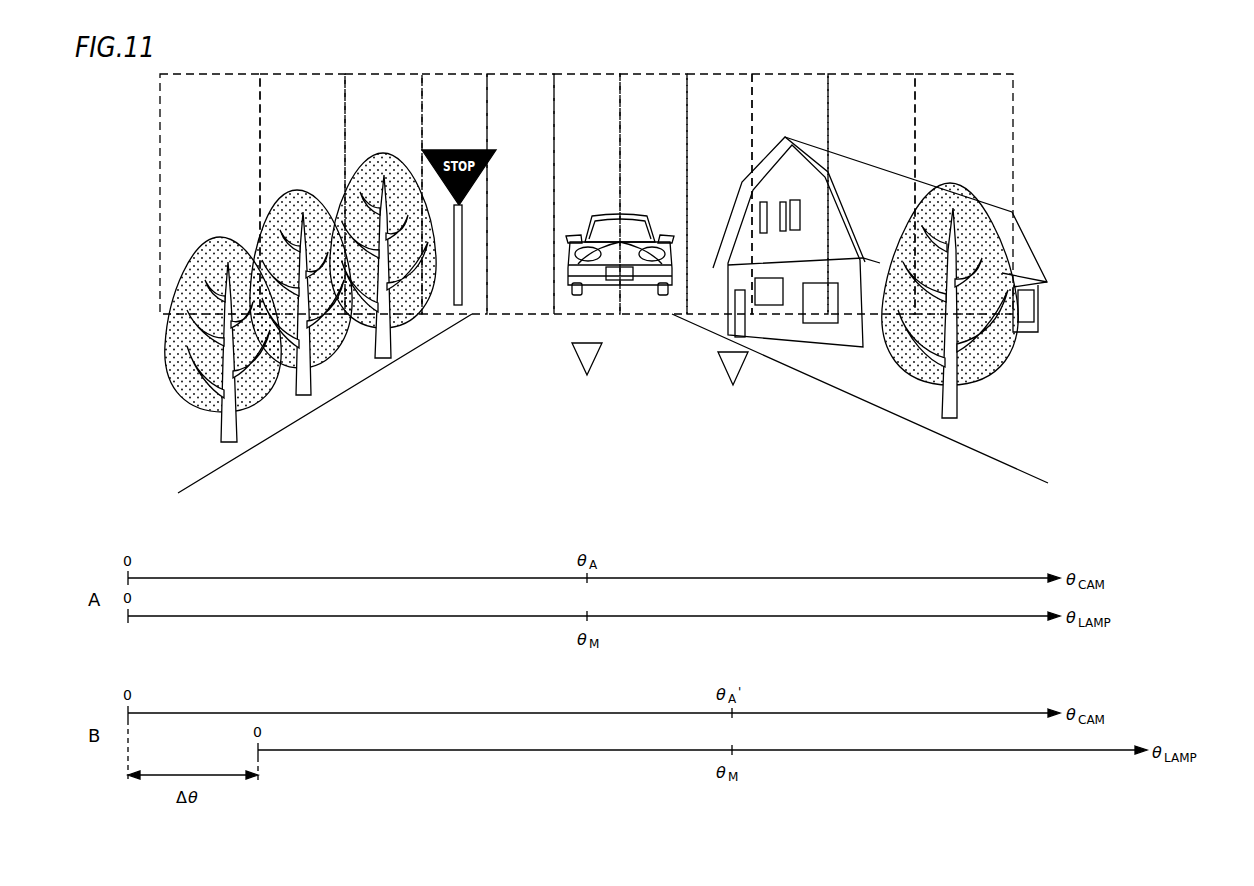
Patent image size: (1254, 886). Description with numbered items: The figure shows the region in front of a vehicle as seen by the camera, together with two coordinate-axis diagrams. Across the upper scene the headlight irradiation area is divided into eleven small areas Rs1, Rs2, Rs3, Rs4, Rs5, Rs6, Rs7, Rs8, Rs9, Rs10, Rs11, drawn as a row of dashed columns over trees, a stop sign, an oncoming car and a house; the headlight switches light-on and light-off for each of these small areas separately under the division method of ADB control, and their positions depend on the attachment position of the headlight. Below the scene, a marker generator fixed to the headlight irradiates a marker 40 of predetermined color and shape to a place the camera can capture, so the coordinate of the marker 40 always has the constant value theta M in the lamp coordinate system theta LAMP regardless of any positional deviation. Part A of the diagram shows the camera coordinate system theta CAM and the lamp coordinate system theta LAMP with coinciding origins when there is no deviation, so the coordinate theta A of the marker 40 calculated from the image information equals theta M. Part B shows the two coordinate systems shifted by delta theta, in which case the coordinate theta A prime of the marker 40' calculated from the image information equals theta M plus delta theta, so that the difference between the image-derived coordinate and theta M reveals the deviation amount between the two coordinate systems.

The small area Rs1 is at (210, 194).
The small area Rs2 is at (302, 194).
The small area Rs3 is at (383, 194).
The small area Rs4 is at (454, 194).
The small area Rs5 is at (520, 194).
The small area Rs6 is at (587, 194).
The small area Rs7 is at (653, 194).
The small area Rs8 is at (719, 194).
The small area Rs9 is at (790, 194).
The small area Rs10 is at (871, 194).
The small area Rs11 is at (964, 194).
The marker 40 is at (612, 366).
The marker 40' is at (752, 374).